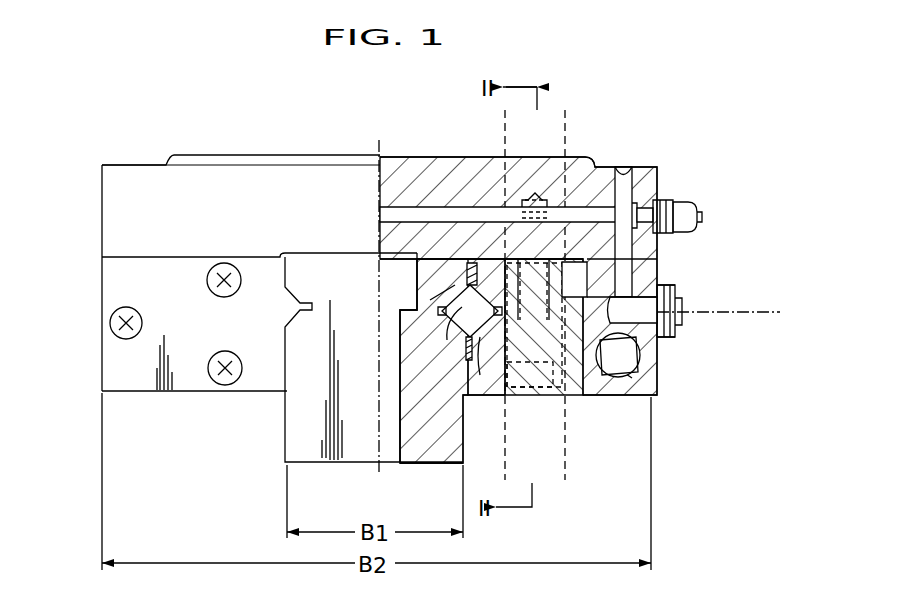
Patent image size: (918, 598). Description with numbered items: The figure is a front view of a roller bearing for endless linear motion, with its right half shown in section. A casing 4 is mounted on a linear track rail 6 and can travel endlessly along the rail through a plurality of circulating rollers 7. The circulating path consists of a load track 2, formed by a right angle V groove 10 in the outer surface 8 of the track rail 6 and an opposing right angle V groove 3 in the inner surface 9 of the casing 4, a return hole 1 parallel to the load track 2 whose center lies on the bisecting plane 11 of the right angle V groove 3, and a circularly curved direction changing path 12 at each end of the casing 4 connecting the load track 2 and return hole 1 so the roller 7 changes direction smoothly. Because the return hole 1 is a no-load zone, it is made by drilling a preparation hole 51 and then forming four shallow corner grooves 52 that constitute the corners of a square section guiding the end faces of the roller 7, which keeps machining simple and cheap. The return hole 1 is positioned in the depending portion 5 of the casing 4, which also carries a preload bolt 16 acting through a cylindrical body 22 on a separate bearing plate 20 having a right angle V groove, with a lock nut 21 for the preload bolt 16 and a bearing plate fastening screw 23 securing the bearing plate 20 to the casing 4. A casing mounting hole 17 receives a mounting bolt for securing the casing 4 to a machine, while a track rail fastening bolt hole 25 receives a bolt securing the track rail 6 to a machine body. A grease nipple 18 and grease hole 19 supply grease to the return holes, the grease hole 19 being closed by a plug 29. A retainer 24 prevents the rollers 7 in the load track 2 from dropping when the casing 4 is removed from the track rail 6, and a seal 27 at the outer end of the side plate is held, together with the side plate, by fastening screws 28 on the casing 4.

The return hole 1 is at (657, 385).
The load track 2 is at (462, 340).
The right angle V groove 3 is at (472, 335).
The casing 4 is at (244, 217).
The depending portion 5 is at (650, 262).
The track rail 6 is at (360, 374).
The roller 7 is at (462, 302).
The outer surface 8 is at (466, 436).
The inner surface 9 is at (470, 396).
The right angle V groove 10 is at (445, 318).
The bisecting plane 11 is at (760, 312).
The direction changing path 12 is at (563, 395).
The preload bolt 16 is at (677, 317).
The casing mounting hole 17 is at (565, 172).
The grease nipple 18 is at (690, 202).
The grease hole 19 is at (586, 212).
The bearing plate 20 is at (585, 395).
The lock nut 21 is at (672, 292).
The cylindrical body 22 is at (627, 280).
The bearing plate fastening screw 23 is at (540, 395).
The retainer 24 is at (470, 263).
The track rail fastening bolt hole 25 is at (392, 464).
The seal 27 is at (195, 376).
The fastening screws 28 is at (110, 323).
The plug 29 is at (624, 167).
The preparation hole 51 is at (657, 363).
The corner grooves 52 is at (620, 393).